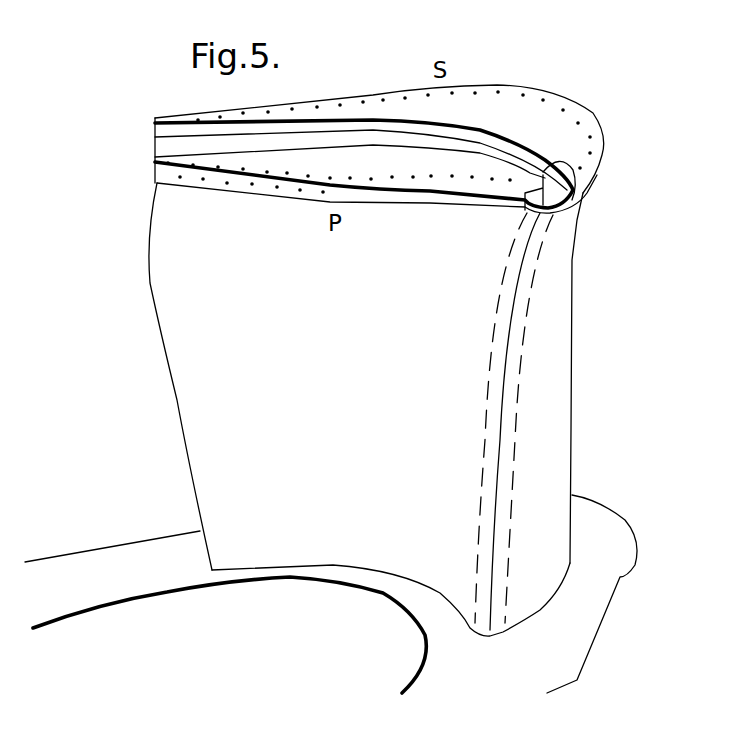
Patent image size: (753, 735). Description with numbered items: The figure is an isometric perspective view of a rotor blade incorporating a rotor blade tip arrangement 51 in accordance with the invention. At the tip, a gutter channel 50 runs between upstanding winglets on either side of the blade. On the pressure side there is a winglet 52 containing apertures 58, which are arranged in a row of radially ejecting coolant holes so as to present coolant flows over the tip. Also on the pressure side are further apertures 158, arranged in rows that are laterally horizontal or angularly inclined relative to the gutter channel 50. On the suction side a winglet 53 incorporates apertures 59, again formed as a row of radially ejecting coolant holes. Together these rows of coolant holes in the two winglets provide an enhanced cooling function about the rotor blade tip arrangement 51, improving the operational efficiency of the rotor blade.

The gutter channel 50 is at (168, 145).
The rotor blade tip arrangement 51 is at (150, 425).
The winglet 52 is at (593, 168).
The winglet 53 is at (578, 140).
The apertures 58 is at (447, 177).
The apertures 59 is at (383, 100).
The apertures 158 is at (247, 183).